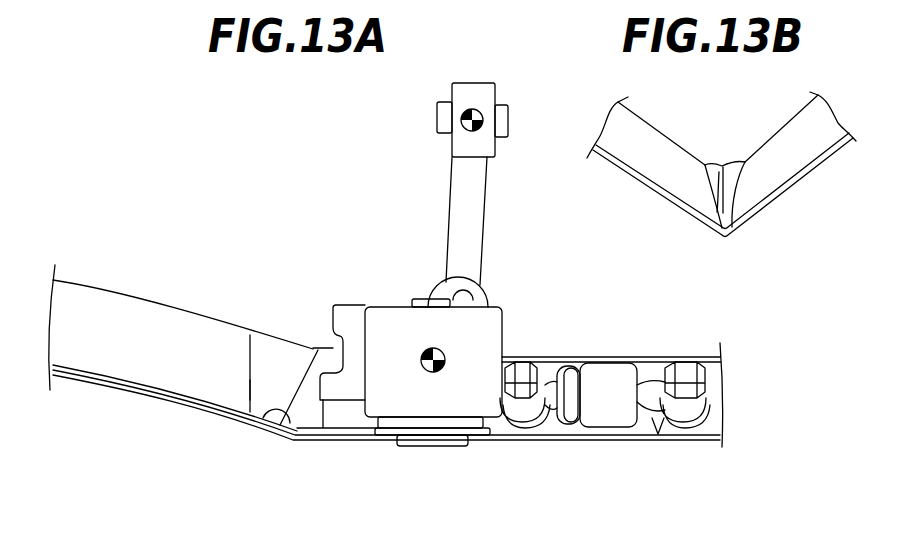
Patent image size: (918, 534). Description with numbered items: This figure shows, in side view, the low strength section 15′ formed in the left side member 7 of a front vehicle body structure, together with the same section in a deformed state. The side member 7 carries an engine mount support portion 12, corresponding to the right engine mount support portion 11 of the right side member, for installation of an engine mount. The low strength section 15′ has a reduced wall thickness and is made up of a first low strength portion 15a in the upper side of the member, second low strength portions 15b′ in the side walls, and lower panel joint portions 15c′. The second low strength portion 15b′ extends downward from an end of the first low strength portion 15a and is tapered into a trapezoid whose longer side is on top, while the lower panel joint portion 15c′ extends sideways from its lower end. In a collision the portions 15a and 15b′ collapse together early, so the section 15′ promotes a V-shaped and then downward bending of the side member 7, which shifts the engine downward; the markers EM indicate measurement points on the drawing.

The left side member 7 is at (118, 302).
The low strength section 15′ is at (272, 338).
The first low strength portion 15a is at (290, 342).
The second low strength portion 15b′ is at (260, 372).
The lower panel joint portion 15c′ is at (285, 433).
The right engine mount support portion 11 is at (482, 290).
The left engine mount support portion 12 is at (472, 332).
The electronic measurement marker EM is at (461, 128).